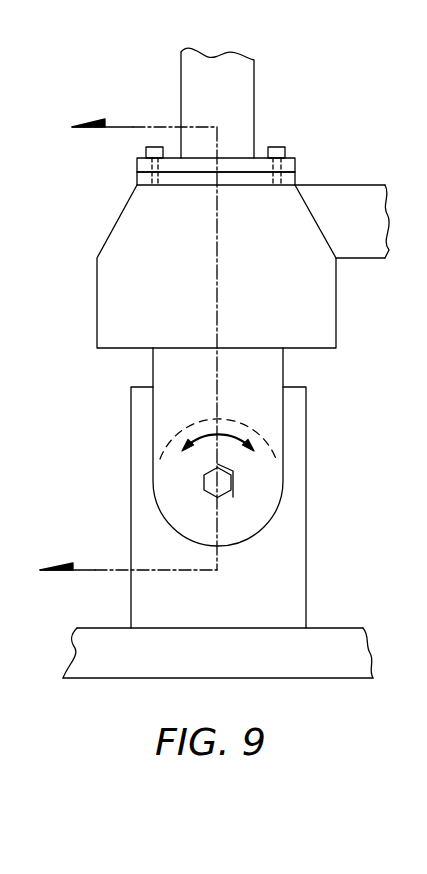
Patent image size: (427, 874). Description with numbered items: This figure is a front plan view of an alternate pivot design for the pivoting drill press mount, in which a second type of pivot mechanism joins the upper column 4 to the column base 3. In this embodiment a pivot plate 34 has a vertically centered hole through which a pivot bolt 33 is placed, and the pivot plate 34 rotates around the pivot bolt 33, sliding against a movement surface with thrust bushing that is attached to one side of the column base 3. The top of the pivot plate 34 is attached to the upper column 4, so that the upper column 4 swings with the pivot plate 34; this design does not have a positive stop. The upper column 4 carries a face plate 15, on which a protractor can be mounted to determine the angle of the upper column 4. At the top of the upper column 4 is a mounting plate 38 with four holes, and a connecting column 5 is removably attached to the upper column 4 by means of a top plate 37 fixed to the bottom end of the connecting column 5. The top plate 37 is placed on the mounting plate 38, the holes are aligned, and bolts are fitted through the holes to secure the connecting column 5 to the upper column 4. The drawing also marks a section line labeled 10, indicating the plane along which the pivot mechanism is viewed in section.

The column base 3 is at (307, 567).
The upper column 4 is at (287, 114).
The connecting column 5 is at (193, 101).
The section line 10- 10 is at (128, 326).
The face plate 15 is at (288, 257).
The pivot bolt 33 is at (228, 483).
The pivot plate 34 is at (270, 374).
The top plate 37 is at (296, 160).
The mounting plate 38 is at (296, 178).